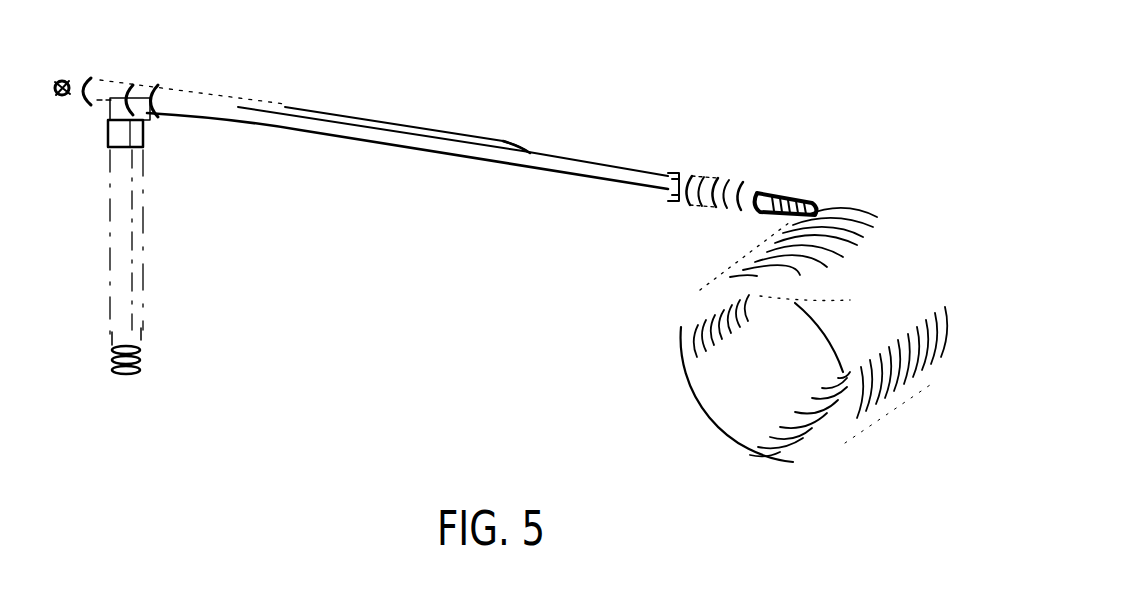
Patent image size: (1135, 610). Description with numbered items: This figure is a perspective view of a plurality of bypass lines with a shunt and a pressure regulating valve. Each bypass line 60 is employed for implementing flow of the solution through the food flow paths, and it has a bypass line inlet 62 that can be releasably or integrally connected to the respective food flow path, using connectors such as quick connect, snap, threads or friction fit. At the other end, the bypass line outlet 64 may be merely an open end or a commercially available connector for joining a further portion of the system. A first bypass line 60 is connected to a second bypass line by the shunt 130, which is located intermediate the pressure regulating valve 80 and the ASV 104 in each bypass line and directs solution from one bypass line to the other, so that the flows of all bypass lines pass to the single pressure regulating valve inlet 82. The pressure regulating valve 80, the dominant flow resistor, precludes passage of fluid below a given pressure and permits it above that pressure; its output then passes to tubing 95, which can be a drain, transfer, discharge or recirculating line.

The bypass line 60 is at (307, 110).
The bypass line inlet 62 is at (143, 370).
The bypass line outlet 64 is at (666, 193).
The pressure regulating valve 80 is at (707, 173).
The pressure regulating valve inlet 82 is at (671, 174).
The tubing 95 is at (737, 442).
The ASV 104 is at (68, 95).
The shunt 130 is at (523, 150).